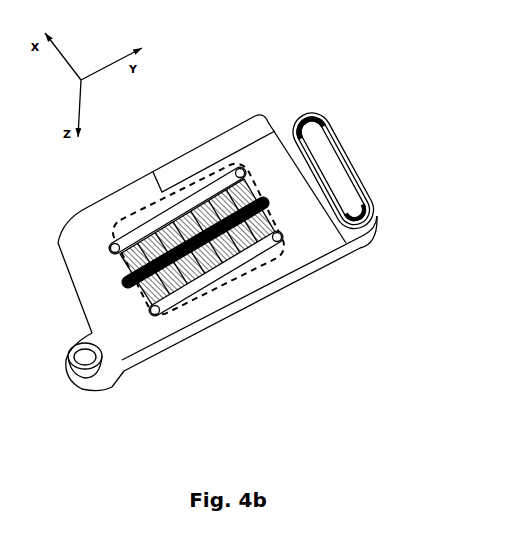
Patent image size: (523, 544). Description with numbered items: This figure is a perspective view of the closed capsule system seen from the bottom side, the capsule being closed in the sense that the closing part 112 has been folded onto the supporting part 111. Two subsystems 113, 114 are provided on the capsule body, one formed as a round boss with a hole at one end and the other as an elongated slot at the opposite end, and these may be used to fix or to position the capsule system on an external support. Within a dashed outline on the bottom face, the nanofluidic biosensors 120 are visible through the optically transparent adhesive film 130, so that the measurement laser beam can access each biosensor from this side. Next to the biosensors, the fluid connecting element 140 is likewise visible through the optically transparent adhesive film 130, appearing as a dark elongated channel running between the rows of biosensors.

The supporting part 111 is at (302, 275).
The closing part 112 is at (213, 133).
The subsystem 113 is at (90, 368).
The subsystem 114 is at (353, 218).
The nanofluidic biosensors 120 is at (243, 262).
The optically transparent adhesive film 130 is at (137, 320).
The fluid connecting element 140 is at (187, 258).